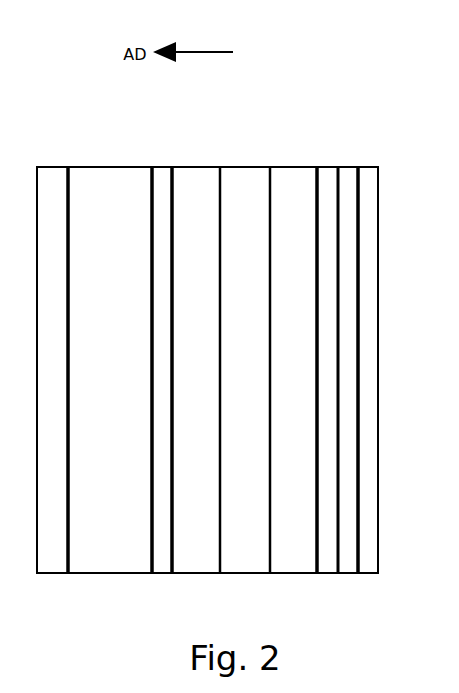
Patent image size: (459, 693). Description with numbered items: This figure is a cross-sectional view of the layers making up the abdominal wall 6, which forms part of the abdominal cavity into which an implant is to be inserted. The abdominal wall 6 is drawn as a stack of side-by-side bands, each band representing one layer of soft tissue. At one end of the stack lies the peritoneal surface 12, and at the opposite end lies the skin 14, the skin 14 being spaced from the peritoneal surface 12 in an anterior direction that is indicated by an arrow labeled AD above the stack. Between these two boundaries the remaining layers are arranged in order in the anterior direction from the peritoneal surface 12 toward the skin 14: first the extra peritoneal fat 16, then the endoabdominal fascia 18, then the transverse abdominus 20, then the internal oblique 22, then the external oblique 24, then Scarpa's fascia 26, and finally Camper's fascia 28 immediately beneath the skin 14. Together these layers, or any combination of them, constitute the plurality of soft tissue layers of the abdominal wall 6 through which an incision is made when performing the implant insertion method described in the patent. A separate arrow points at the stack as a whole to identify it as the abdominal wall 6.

The abdominal wall 6 is at (282, 77).
The peritoneal surface 12 is at (368, 178).
The skin 14 is at (52, 175).
The extra peritoneal fat 16 is at (348, 172).
The endoabdominal fascia 18 is at (323, 175).
The transverse abdominus 20 is at (288, 178).
The internal oblique 22 is at (238, 175).
The external oblique 24 is at (189, 178).
The Scarpa's fascia 26 is at (158, 175).
The Camper's fascia 28 is at (99, 178).